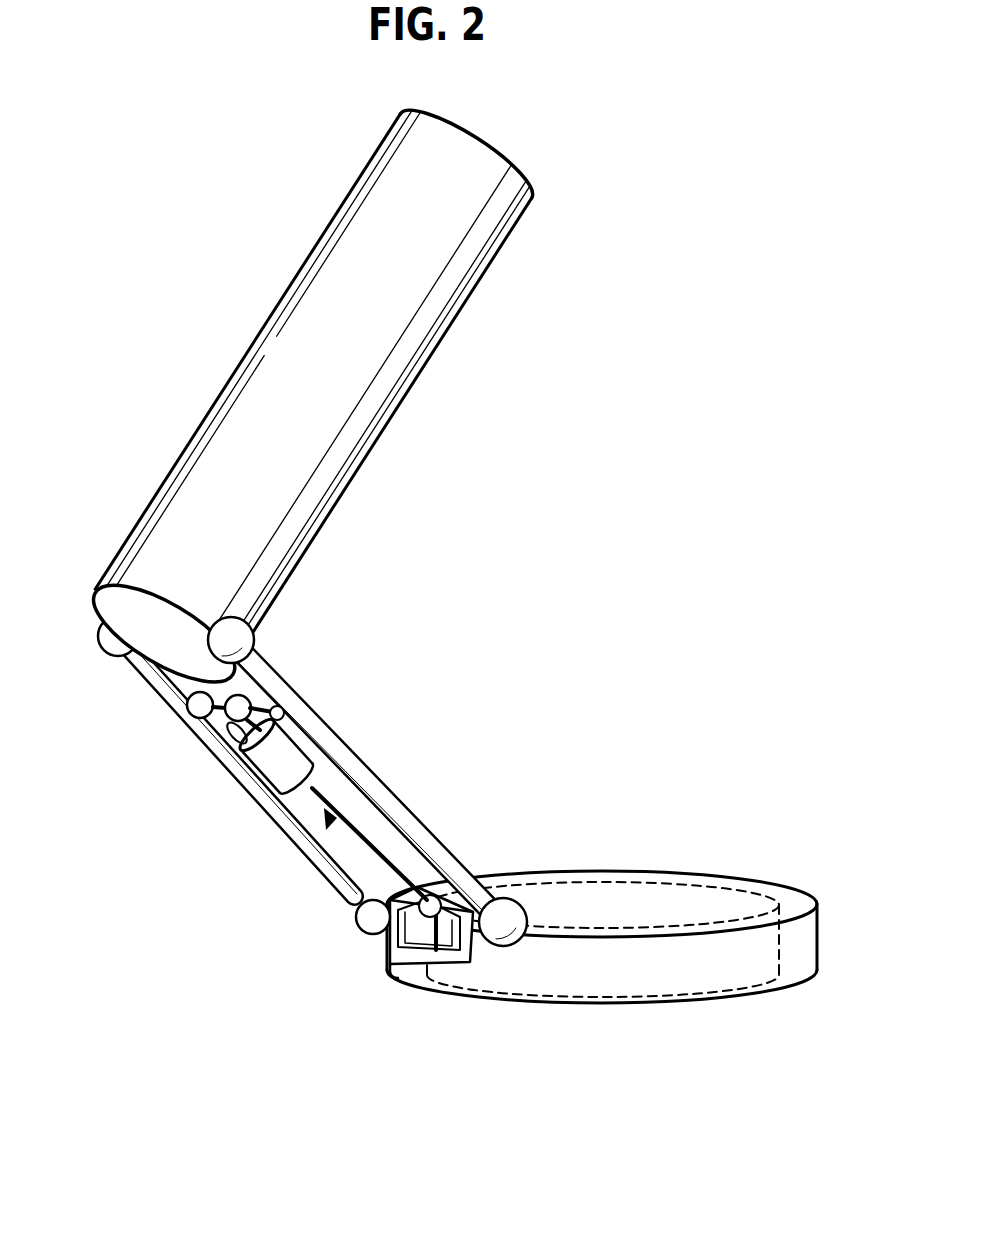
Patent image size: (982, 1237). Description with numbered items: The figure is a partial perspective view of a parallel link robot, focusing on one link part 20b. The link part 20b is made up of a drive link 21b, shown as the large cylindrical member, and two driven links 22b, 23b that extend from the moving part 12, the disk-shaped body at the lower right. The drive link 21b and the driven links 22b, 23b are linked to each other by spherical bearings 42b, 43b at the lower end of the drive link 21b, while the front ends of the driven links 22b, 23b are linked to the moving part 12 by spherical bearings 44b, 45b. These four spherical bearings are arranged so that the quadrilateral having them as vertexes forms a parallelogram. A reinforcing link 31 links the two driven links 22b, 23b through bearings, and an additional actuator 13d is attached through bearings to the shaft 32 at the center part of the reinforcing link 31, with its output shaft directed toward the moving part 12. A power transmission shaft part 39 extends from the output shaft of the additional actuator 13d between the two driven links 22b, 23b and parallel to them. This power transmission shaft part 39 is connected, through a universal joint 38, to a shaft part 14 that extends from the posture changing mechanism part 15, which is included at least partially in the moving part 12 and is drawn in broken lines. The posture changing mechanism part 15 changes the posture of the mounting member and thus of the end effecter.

The moving part 12 is at (790, 970).
The posture changing mechanism part 15 is at (648, 990).
The shaft part 14 is at (405, 975).
The universal joint 38 is at (427, 907).
The power transmission shaft part 39 is at (312, 843).
The additional actuator 13d is at (270, 773).
The reinforcing link 31 is at (213, 738).
The shaft 32 is at (227, 760).
The link part 20b is at (321, 519).
The drive link 21b is at (483, 230).
The driven link 22b is at (333, 873).
The driven link 23b is at (440, 838).
The spherical bearing 42b is at (113, 640).
The spherical bearing 43b is at (250, 637).
The spherical bearing 44b is at (373, 913).
The spherical bearing 45b is at (503, 937).